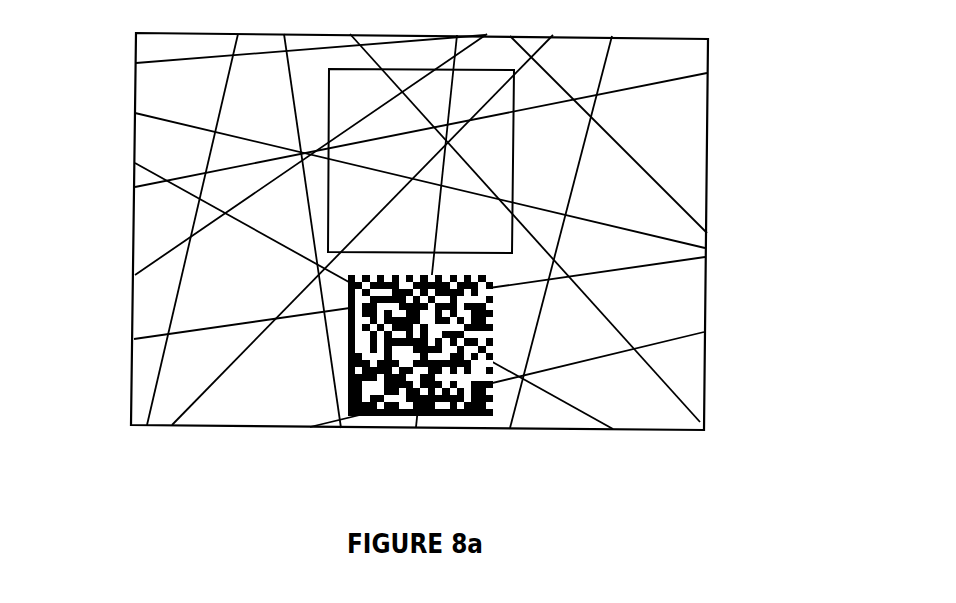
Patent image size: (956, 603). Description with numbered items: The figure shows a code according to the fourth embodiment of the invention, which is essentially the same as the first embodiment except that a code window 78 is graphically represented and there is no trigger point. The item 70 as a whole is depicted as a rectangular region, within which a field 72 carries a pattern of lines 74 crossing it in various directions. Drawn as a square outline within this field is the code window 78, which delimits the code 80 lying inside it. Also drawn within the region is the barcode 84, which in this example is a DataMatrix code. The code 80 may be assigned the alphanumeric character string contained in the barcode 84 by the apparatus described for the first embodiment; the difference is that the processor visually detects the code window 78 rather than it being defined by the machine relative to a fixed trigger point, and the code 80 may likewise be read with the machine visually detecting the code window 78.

The label 70 is at (752, 222).
The label substrate surface 72 is at (662, 315).
The random line pattern 74 is at (167, 337).
The code window 78 is at (328, 100).
The code 80 is at (488, 149).
The barcode 84 is at (453, 415).